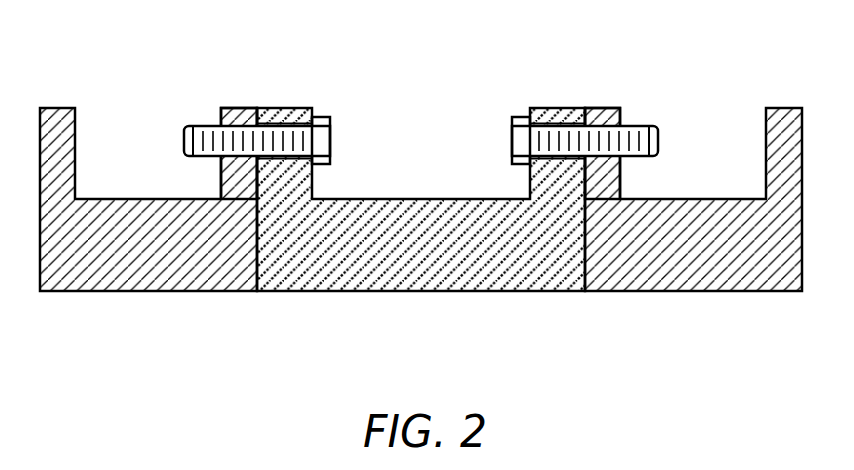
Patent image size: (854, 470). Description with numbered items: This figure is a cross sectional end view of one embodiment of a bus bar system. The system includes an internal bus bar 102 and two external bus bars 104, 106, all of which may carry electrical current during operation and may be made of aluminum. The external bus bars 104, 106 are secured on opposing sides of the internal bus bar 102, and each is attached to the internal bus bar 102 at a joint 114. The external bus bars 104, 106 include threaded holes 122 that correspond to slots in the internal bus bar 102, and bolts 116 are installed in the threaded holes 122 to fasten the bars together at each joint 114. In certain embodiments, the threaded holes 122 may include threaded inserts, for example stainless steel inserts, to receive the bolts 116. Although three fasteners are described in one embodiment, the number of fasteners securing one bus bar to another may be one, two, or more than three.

The internal bus bar 102 is at (508, 280).
The external bus bar 104 is at (138, 280).
The external bus bar 106 is at (705, 280).
The joint 114 is at (262, 88).
The bolt 116 is at (330, 145).
The threaded hole 122 is at (232, 108).